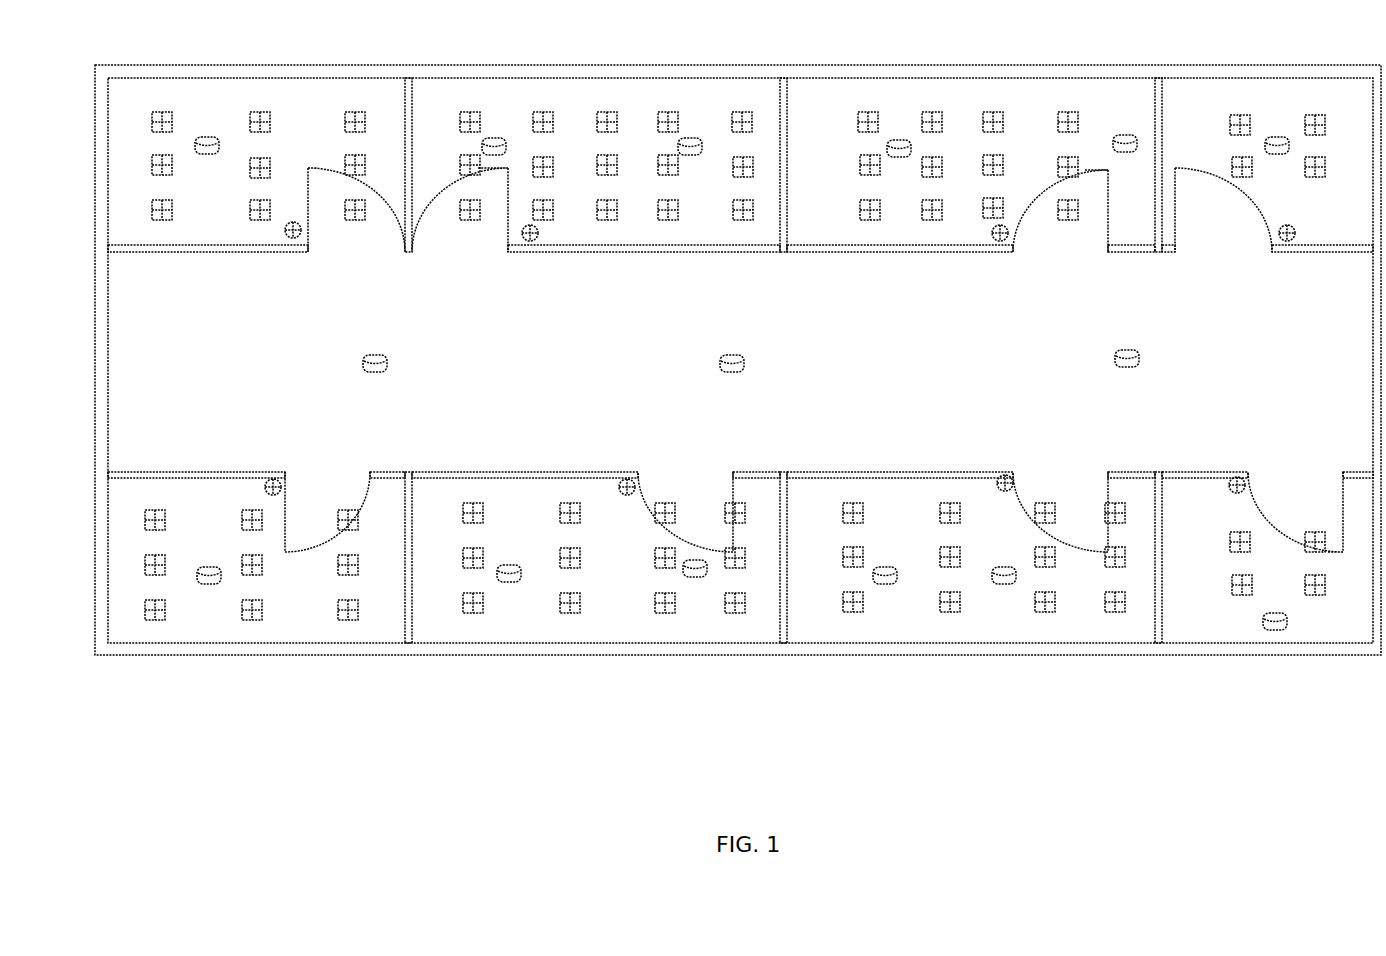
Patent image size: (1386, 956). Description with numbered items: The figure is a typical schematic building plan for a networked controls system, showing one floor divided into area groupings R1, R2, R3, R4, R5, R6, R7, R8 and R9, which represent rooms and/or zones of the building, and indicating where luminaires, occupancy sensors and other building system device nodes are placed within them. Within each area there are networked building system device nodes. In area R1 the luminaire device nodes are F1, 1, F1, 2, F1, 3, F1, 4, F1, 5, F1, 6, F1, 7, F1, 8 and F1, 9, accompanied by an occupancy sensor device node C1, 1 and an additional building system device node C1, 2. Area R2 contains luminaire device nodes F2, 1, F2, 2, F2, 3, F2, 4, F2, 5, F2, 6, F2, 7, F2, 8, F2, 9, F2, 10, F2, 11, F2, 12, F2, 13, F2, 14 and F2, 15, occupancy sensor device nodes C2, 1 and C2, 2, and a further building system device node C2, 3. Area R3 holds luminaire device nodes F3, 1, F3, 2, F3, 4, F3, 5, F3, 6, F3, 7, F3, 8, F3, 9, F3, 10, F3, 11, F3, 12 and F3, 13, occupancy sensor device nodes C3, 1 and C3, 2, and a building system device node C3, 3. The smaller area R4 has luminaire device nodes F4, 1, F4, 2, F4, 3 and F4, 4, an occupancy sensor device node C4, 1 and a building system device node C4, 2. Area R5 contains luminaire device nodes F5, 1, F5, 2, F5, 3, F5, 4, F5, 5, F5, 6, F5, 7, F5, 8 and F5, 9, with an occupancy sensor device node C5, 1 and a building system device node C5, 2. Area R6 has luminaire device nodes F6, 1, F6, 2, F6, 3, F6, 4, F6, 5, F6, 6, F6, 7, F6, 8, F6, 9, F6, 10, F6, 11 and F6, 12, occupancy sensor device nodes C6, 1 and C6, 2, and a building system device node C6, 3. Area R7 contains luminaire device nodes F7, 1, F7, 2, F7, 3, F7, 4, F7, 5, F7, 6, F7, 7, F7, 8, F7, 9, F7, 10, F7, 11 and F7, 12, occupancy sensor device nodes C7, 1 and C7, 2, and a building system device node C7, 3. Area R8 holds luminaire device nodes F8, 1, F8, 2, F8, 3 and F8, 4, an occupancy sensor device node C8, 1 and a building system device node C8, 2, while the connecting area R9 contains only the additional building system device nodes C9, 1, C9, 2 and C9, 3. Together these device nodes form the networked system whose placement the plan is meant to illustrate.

The area grouping R1 is at (212, 62).
The area grouping R2 is at (575, 62).
The area grouping R3 is at (978, 62).
The area grouping R4 is at (1285, 58).
The area grouping R5 is at (205, 658).
The area grouping R6 is at (580, 658).
The area grouping R7 is at (968, 658).
The area grouping R8 is at (1268, 658).
The area grouping R9 is at (93, 360).
The luminaire device node F1, 1 is at (156, 112).
The luminaire device node F1, 2 is at (156, 155).
The luminaire device node F1, 3 is at (156, 200).
The luminaire device node F1, 4 is at (254, 112).
The luminaire device node F1, 5 is at (254, 158).
The luminaire device node F1, 6 is at (254, 200).
The luminaire device node F1, 7 is at (349, 112).
The luminaire device node F1, 8 is at (349, 155).
The luminaire device node F1, 9 is at (349, 200).
The occupancy sensor device node C1, 1 is at (205, 137).
The building system device node C1, 2 is at (292, 222).
The luminaire device node F2, 1 is at (464, 112).
The luminaire device node F2, 2 is at (464, 155).
The luminaire device node F2, 3 is at (464, 200).
The luminaire device node F2, 4 is at (544, 112).
The luminaire device node F2, 5 is at (538, 157).
The luminaire device node F2, 6 is at (540, 200).
The luminaire device node F2, 7 is at (602, 112).
The luminaire device node F2, 8 is at (602, 155).
The luminaire device node F2, 9 is at (602, 200).
The luminaire device node F2, 10 is at (661, 112).
The luminaire device node F2, 11 is at (661, 155).
The luminaire device node F2, 12 is at (661, 200).
The luminaire device node F2, 13 is at (736, 112).
The luminaire device node F2, 14 is at (738, 157).
The luminaire device node F2, 15 is at (738, 200).
The occupancy sensor device node C2, 1 is at (490, 136).
The occupancy sensor device node C2, 2 is at (687, 137).
The building system device node C2, 3 is at (524, 228).
The luminaire device node F3, 1 is at (860, 112).
The luminaire device node F3, 2 is at (862, 155).
The luminaire device node F3, 4 is at (862, 200).
The luminaire device node F3, 5 is at (926, 112).
The luminaire device node F3, 6 is at (932, 157).
The luminaire device node F3, 7 is at (926, 200).
The luminaire device node F3, 8 is at (987, 112).
The luminaire device node F3, 9 is at (992, 155).
The luminaire device node F3, 10 is at (990, 198).
The luminaire device node F3, 11 is at (1063, 112).
The luminaire device node F3, 12 is at (1064, 157).
The luminaire device node F3, 13 is at (1062, 200).
The occupancy sensor device node C3, 1 is at (897, 139).
The occupancy sensor device node C3, 2 is at (1119, 135).
The building system device node C3, 3 is at (992, 231).
The luminaire device node F4, 1 is at (1234, 115).
The luminaire device node F4, 2 is at (1236, 157).
The luminaire device node F4, 3 is at (1312, 115).
The luminaire device node F4, 4 is at (1319, 158).
The occupancy sensor device node C4, 1 is at (1277, 137).
The building system device node C4, 2 is at (1279, 229).
The luminaire device node F5, 1 is at (149, 510).
The luminaire device node F5, 2 is at (149, 555).
The luminaire device node F5, 3 is at (149, 600).
The luminaire device node F5, 4 is at (246, 510).
The luminaire device node F5, 5 is at (247, 555).
The luminaire device node F5, 6 is at (250, 600).
The luminaire device node F5, 7 is at (343, 510).
The luminaire device node F5, 8 is at (342, 555).
The luminaire device node F5, 9 is at (343, 600).
The occupancy sensor device node C5, 1 is at (205, 567).
The building system device node C5, 2 is at (265, 480).
The luminaire device node F6, 1 is at (467, 503).
The luminaire device node F6, 2 is at (467, 548).
The luminaire device node F6, 3 is at (467, 593).
The luminaire device node F6, 4 is at (565, 503).
The luminaire device node F6, 5 is at (565, 548).
The luminaire device node F6, 6 is at (566, 593).
The luminaire device node F6, 7 is at (664, 503).
The luminaire device node F6, 8 is at (662, 548).
The luminaire device node F6, 9 is at (663, 593).
The luminaire device node F6, 10 is at (730, 503).
The luminaire device node F6, 11 is at (733, 548).
The luminaire device node F6, 12 is at (733, 593).
The occupancy sensor device node C6, 1 is at (700, 560).
The occupancy sensor device node C6, 2 is at (500, 563).
The building system device node C6, 3 is at (619, 483).
The luminaire device node F7, 1 is at (847, 503).
The luminaire device node F7, 2 is at (847, 547).
The luminaire device node F7, 3 is at (847, 592).
The luminaire device node F7, 4 is at (944, 503).
The luminaire device node F7, 5 is at (945, 547).
The luminaire device node F7, 6 is at (947, 592).
The luminaire device node F7, 7 is at (1044, 503).
The luminaire device node F7, 8 is at (1046, 547).
The luminaire device node F7, 9 is at (1047, 592).
The luminaire device node F7, 10 is at (1110, 503).
The luminaire device node F7, 11 is at (1112, 547).
The luminaire device node F7, 12 is at (1112, 592).
The occupancy sensor device node C7, 1 is at (1002, 566).
The occupancy sensor device node C7, 2 is at (880, 564).
The building system device node C7, 3 is at (997, 480).
The luminaire device node F8, 1 is at (1234, 532).
The luminaire device node F8, 2 is at (1236, 575).
The luminaire device node F8, 3 is at (1309, 532).
The luminaire device node F8, 4 is at (1309, 575).
The occupancy sensor device node C8, 1 is at (1275, 612).
The building system device node C8, 2 is at (1229, 480).
The building system device node C9, 1 is at (362, 355).
The building system device node C9, 2 is at (719, 355).
The building system device node C9, 3 is at (1114, 350).